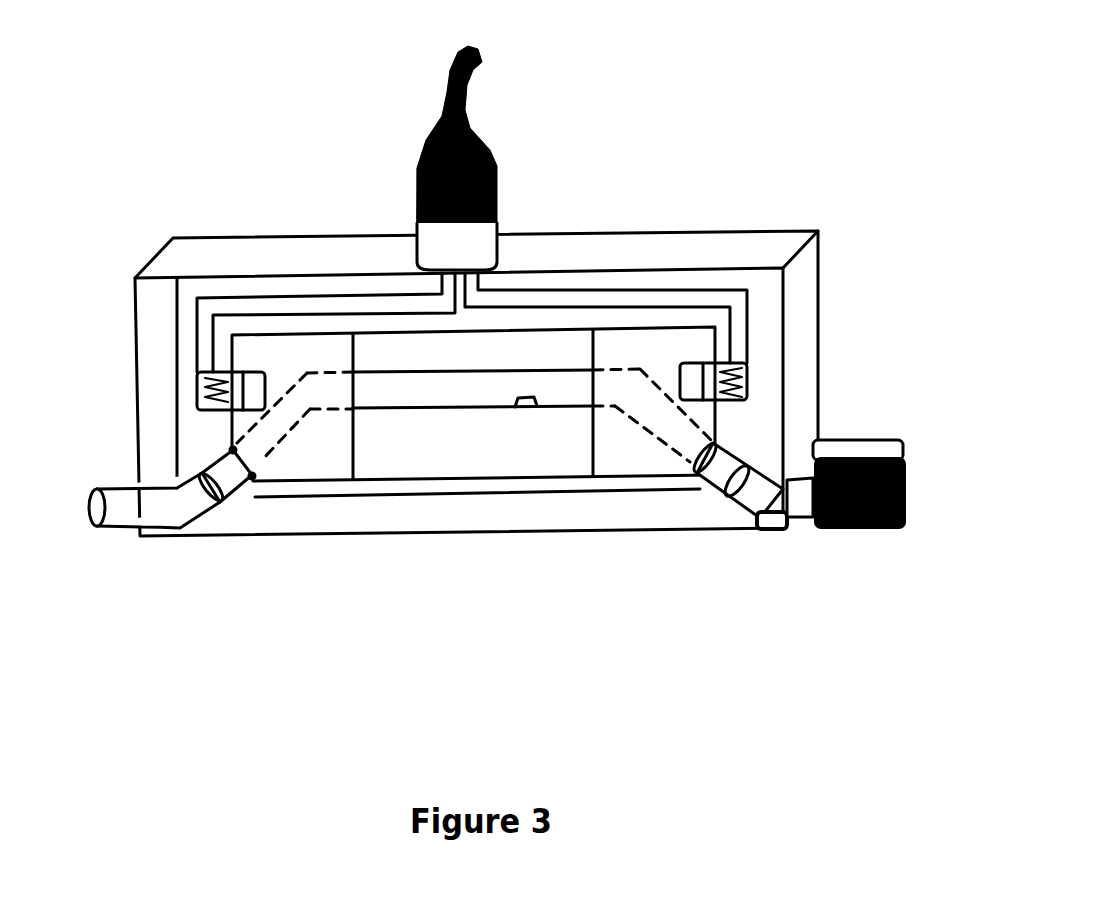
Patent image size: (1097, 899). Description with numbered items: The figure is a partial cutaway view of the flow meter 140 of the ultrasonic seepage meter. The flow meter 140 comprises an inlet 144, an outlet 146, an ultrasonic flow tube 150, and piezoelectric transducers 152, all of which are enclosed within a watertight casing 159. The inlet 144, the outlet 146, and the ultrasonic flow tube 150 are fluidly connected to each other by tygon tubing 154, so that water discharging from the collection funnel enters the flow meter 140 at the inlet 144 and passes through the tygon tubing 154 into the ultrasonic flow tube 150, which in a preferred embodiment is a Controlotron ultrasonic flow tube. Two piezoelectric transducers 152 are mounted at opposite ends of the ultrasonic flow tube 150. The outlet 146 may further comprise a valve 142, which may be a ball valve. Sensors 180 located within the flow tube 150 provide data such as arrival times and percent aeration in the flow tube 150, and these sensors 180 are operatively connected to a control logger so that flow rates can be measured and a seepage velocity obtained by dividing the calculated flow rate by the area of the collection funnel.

The flow meter 140 is at (582, 205).
The valve 142 is at (857, 528).
The inlet 144 is at (137, 490).
The outlet 146 is at (802, 470).
The ultrasonic flow tube 150 is at (470, 407).
The piezoelectric transducers 152 is at (250, 372).
The tygon tubing 154 is at (182, 530).
The watertight casing 159 is at (355, 237).
The sensors 180 is at (527, 407).